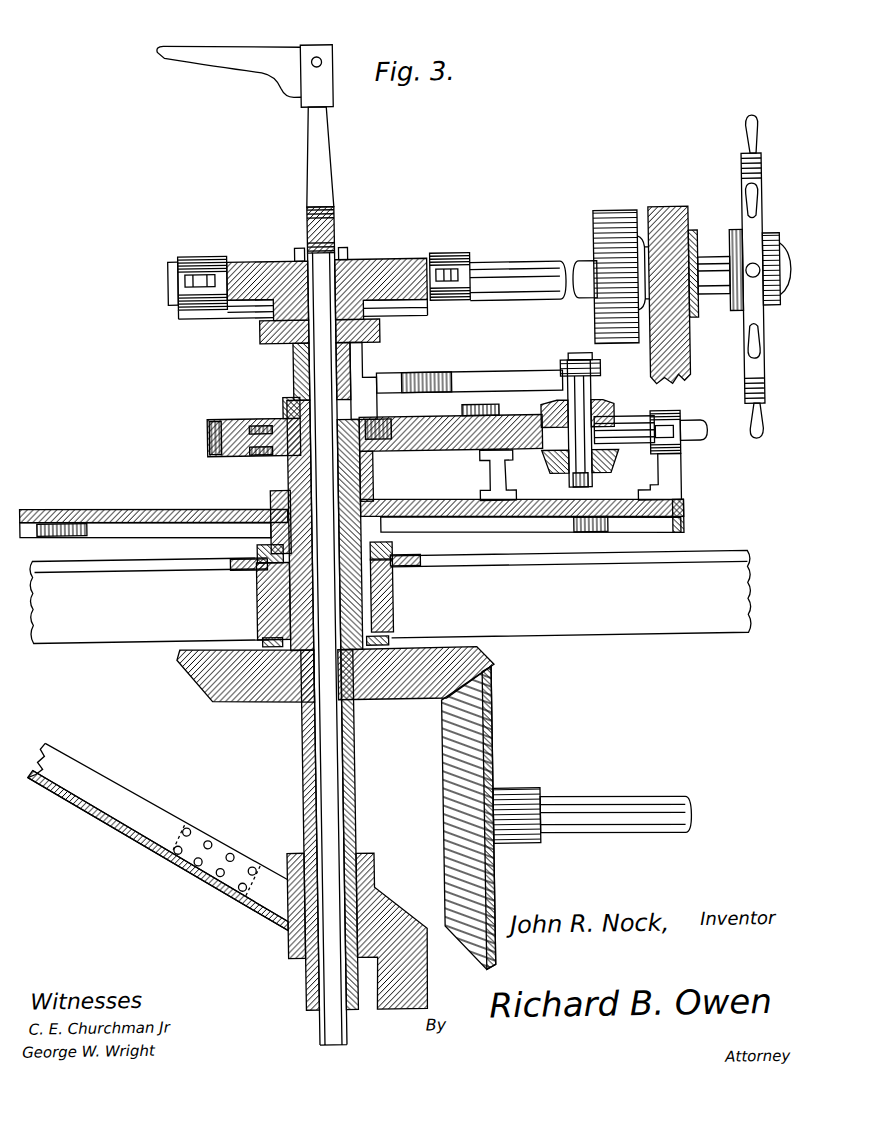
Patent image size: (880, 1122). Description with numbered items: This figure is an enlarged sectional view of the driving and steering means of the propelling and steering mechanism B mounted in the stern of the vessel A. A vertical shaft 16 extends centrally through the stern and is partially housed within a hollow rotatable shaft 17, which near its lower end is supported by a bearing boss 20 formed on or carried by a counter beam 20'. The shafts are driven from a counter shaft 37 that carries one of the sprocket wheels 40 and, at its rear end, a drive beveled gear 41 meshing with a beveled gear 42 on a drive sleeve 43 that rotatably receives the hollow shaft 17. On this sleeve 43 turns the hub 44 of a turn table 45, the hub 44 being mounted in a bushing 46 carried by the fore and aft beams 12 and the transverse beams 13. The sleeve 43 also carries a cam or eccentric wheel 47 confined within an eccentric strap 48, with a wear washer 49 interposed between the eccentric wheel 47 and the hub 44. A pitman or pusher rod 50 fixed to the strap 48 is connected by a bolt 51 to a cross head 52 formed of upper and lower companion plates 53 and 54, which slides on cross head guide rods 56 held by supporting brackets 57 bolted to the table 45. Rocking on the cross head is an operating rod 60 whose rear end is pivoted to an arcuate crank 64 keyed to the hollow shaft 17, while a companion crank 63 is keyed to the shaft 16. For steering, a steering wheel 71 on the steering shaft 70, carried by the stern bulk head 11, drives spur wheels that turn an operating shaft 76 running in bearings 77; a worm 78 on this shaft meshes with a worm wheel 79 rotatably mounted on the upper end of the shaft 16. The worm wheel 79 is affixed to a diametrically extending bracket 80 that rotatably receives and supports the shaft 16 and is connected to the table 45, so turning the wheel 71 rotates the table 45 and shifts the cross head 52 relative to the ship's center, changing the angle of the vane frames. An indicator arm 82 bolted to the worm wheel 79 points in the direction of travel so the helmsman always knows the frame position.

The indicator arm 82 is at (276, 51).
The vertical shaft 16 is at (337, 798).
The hollow rotatable shaft 17 is at (349, 758).
The arcuate crank 64 is at (301, 364).
The diametrically extending bracket 80 is at (266, 334).
The worm wheel 79 is at (373, 267).
The bearings 77 is at (195, 258).
The propelling and steering mechanism B is at (425, 262).
The operating shaft 76 is at (500, 278).
The worm 78 is at (621, 216).
The stern bulk head 11 is at (673, 214).
The steering shaft 70 is at (718, 302).
The steering wheel 71 is at (757, 206).
The cam or eccentric wheel 47 is at (393, 415).
The operating rod 60 is at (499, 383).
The wear washer 49 is at (377, 486).
The pitman or pusher rod 50 is at (531, 412).
The cross head 52 is at (618, 408).
The bolt 51 is at (612, 463).
The cross head guide rods 56 is at (625, 430).
The supporting brackets 57 is at (684, 484).
The upper companion plate 53 is at (530, 486).
The lower companion plate 54 is at (607, 472).
The eccentric strap 48 is at (225, 419).
The arcuate crank 63 is at (290, 405).
The turn table 45 is at (76, 511).
The hub 44 is at (266, 544).
The drive sleeve 43 is at (396, 552).
The bushing 46 is at (265, 589).
The transverse beams 13 is at (394, 614).
The drive beveled gear 41 is at (262, 638).
The fore and aft beams 12 is at (78, 628).
The vessel A is at (689, 621).
The beveled gear 42 is at (463, 658).
The sprocket wheels 40 is at (487, 781).
The counter shaft 37 is at (607, 806).
The bearing boss 20 is at (358, 921).
The counter beam 20' is at (157, 837).